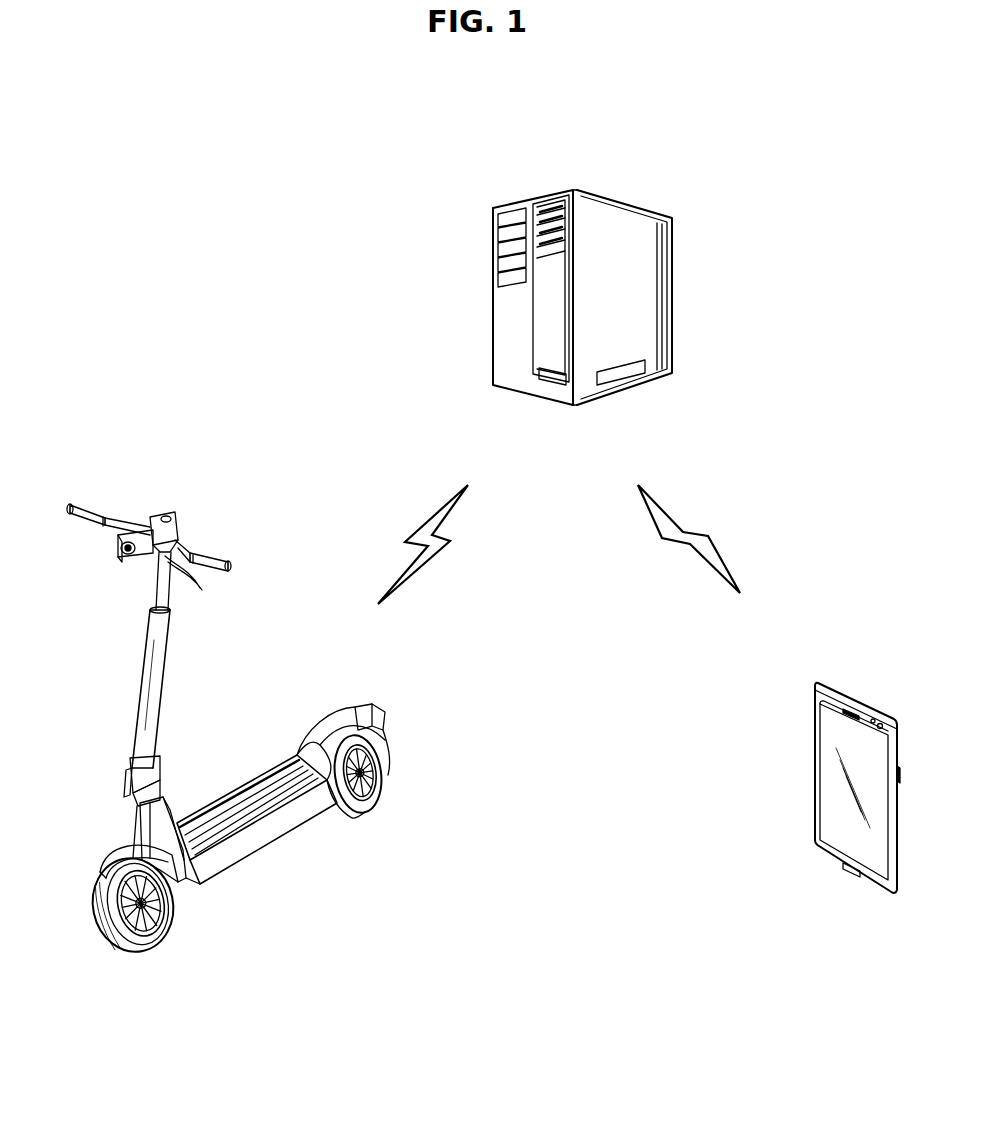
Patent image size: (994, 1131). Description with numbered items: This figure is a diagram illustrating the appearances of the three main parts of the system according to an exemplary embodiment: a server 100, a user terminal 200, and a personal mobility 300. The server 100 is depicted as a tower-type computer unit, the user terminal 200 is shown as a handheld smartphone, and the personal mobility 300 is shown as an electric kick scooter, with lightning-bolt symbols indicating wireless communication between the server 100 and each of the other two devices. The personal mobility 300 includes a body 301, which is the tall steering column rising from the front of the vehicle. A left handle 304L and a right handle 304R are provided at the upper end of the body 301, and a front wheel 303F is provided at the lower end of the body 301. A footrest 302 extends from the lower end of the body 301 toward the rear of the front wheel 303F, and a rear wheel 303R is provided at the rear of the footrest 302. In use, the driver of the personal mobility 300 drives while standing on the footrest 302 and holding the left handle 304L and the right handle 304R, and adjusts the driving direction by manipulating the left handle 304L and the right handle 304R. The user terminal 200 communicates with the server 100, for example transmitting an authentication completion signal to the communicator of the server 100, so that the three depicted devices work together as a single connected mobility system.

The server 100 is at (598, 184).
The user terminal 200 is at (856, 682).
The personal mobility 300 is at (207, 477).
The body 301 is at (158, 682).
The footrest 302 is at (268, 836).
The front wheel 303F is at (158, 926).
The rear wheel 303R is at (379, 781).
The right handle 304R is at (86, 506).
The left handle 304L is at (223, 562).